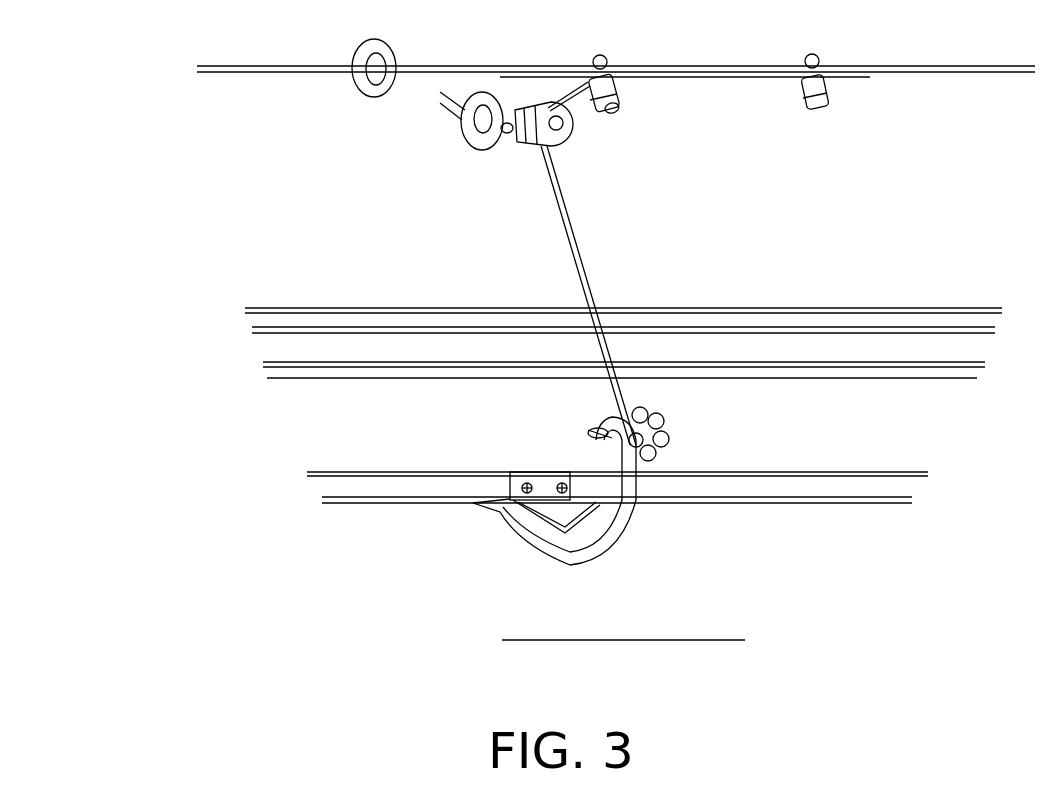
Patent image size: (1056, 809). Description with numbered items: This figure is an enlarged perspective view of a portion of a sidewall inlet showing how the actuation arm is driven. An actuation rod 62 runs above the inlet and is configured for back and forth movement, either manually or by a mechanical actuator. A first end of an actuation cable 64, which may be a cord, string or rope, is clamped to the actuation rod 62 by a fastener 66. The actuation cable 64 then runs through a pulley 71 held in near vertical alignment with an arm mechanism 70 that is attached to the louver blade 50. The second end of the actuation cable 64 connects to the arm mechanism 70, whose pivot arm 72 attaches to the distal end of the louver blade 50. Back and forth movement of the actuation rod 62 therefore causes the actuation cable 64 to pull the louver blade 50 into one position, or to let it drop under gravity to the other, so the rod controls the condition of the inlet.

The louver blade 50 is at (835, 595).
The actuation rod 62 is at (948, 80).
The actuation cable 64 is at (588, 293).
The fastener 66 is at (613, 117).
The arm mechanism 70 is at (477, 526).
The pulley 71 is at (548, 145).
The pivot arm 72 is at (619, 572).